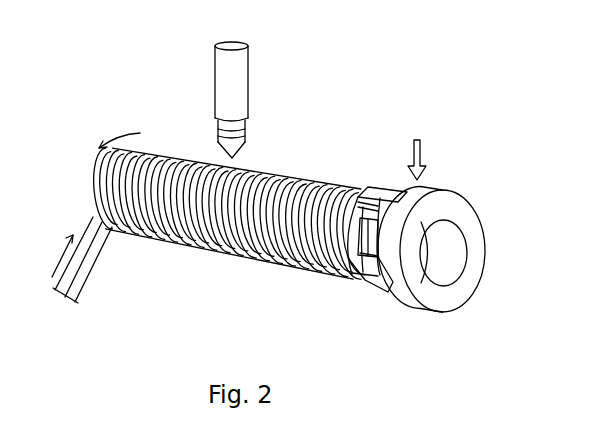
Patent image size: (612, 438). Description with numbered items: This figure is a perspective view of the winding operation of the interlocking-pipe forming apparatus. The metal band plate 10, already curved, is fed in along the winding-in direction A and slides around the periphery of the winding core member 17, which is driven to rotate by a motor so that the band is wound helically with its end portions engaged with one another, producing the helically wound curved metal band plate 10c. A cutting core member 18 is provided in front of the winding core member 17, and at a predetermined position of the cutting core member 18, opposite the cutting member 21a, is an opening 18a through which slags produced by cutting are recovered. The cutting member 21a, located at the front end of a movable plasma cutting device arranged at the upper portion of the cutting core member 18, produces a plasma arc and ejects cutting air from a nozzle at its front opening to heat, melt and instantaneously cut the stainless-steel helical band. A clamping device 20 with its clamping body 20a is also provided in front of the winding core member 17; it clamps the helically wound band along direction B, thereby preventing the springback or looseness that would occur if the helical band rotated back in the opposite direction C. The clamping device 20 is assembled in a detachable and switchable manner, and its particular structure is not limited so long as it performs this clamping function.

The metal band plate for interlocking pipe 10 is at (284, 262).
The helically wound curved metal band plate 10c is at (259, 217).
The winding core member 17 is at (188, 155).
The cutting core member 18 is at (313, 183).
The opening of core member 18a is at (304, 226).
The clamping device 20 is at (464, 294).
The clamping body 20a is at (361, 289).
The cutting member 21a is at (248, 135).
The winding-in direction A is at (57, 256).
The clamping direction B is at (417, 150).
The opposite rotation direction C is at (119, 131).